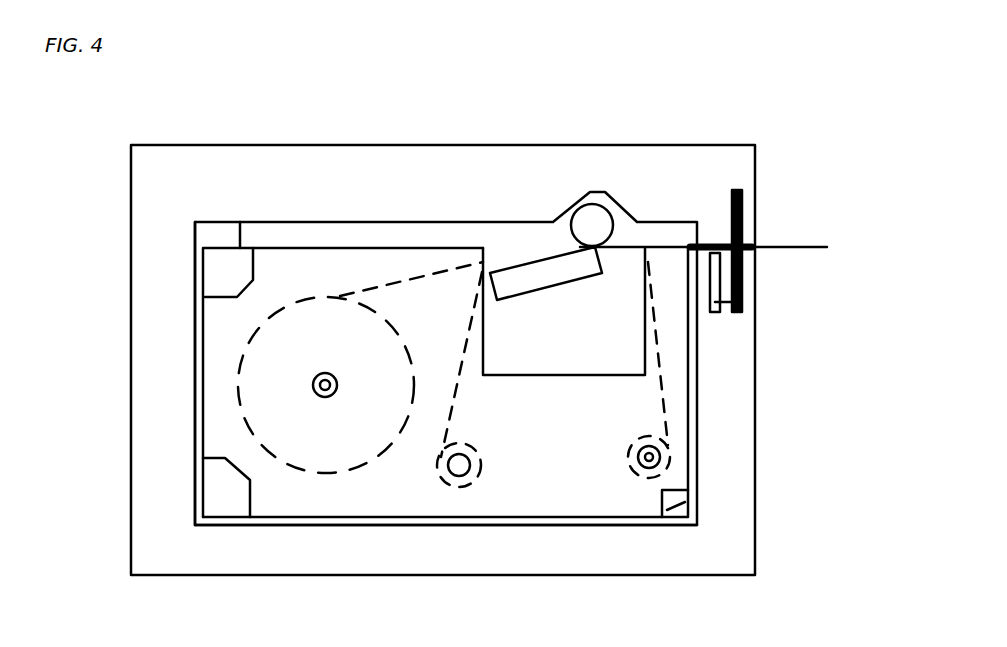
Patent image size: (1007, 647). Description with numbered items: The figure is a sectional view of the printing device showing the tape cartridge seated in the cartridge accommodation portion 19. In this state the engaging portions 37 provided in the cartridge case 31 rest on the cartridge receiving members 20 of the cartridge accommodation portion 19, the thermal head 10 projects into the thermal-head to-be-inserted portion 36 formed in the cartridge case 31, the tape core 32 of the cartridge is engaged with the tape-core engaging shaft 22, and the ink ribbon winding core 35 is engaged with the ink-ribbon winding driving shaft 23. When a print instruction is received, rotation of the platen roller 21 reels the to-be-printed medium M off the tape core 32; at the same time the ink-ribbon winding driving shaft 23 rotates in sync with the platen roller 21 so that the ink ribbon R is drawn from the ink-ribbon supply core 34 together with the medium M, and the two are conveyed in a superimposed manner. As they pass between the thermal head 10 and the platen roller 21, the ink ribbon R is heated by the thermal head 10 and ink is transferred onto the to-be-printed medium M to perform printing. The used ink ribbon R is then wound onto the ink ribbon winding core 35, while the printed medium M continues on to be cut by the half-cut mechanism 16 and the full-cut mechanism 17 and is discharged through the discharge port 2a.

The cartridge accommodation portion 19 is at (202, 180).
The cartridge receiving member 20 is at (205, 235).
The engaging portion 37 is at (217, 265).
The cartridge case 31 is at (307, 247).
The to-be-printed medium M is at (447, 277).
The thermal head 10 is at (530, 262).
The platen roller 21 is at (593, 202).
The thermal-head to-be-inserted portion 36 is at (623, 283).
The half-cut mechanism 16 is at (736, 202).
The discharge port 2a is at (770, 258).
The full-cut mechanism 17 is at (745, 305).
The ink ribbon R is at (455, 405).
The ink ribbon winding core 35 is at (661, 451).
The ink-ribbon winding driving shaft 23 is at (646, 472).
The ink-ribbon supply core 34 is at (466, 474).
The tape-core engaging shaft 22 is at (315, 393).
The tape core 32 is at (315, 379).